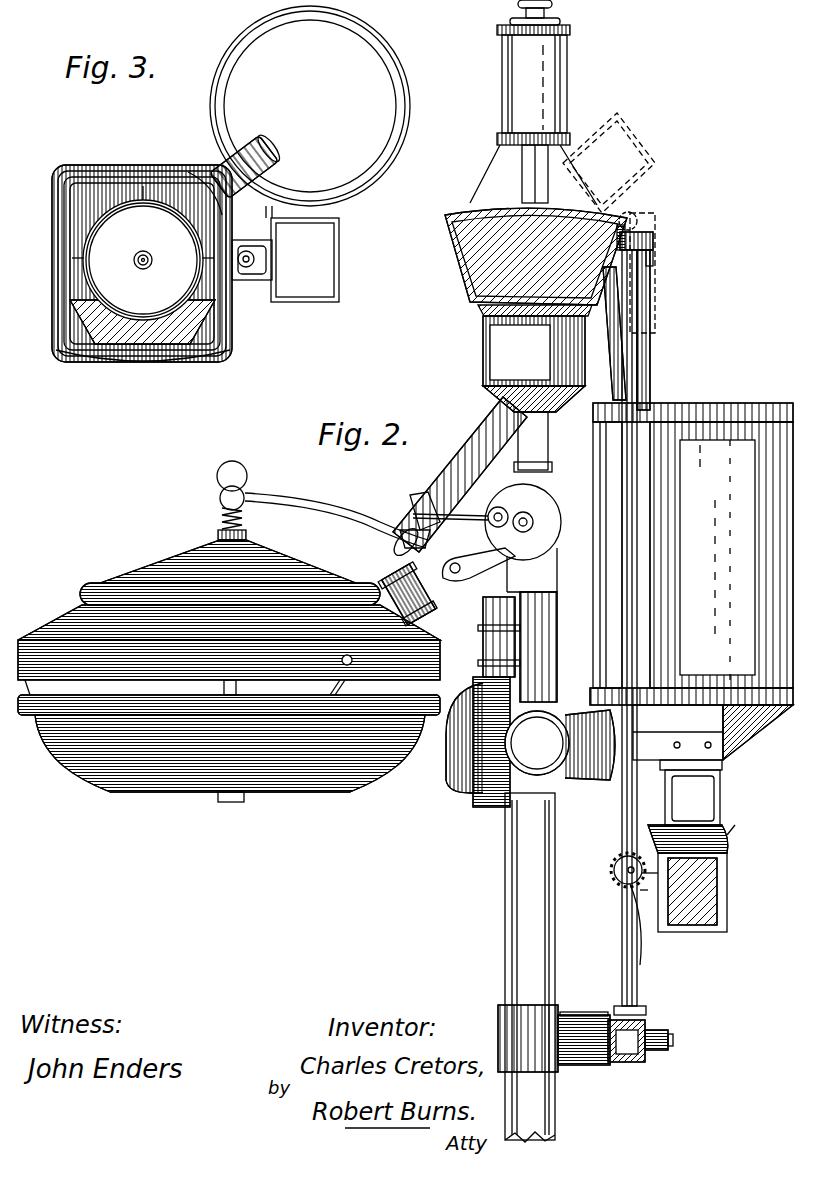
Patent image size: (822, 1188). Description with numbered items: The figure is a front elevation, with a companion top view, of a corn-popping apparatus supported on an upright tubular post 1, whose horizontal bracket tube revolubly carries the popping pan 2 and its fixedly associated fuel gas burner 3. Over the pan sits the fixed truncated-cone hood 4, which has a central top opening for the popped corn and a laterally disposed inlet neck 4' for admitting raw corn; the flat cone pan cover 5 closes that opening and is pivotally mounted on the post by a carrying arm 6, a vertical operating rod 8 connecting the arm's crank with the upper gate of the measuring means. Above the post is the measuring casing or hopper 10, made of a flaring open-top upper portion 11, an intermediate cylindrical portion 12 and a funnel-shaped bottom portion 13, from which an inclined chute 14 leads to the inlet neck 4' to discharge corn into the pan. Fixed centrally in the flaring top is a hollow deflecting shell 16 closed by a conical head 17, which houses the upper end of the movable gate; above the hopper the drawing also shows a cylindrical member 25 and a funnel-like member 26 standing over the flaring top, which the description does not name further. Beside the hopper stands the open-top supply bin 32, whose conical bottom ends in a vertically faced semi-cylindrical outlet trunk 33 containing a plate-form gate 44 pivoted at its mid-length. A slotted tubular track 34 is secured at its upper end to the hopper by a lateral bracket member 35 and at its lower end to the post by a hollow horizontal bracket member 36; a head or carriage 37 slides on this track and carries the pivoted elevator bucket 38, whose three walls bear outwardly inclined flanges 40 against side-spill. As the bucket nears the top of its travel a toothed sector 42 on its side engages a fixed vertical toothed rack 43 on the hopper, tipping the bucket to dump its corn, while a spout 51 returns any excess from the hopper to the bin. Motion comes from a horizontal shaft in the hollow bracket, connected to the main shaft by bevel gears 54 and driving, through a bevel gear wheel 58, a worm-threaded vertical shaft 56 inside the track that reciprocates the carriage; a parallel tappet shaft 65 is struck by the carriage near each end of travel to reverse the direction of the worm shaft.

In FIG. 2, the upright tubular post 1 is at (508, 943).
In FIG. 2, the popping pan 2 is at (229, 667).
In FIG. 2, the fuel gas burner 3 is at (229, 748).
In FIG. 2, the hood 4 is at (229, 622).
In FIG. 2, the inlet neck 4' is at (412, 594).
In FIG. 2, the pan cover 5 is at (230, 572).
In FIG. 2, the carrying arm 6 is at (322, 504).
In FIG. 2, the vertical operating rod 8 is at (487, 476).
In FIG. 3, the casing or hopper 10 is at (142, 253).
In FIG. 2, the flaring open top upper portion 11 is at (536, 262).
In FIG. 2, the intermediate cylindrical portion 12 is at (534, 351).
In FIG. 2, the funnel shaped bottom portion 13 is at (534, 429).
In FIG. 2, the inclined chute 14 is at (455, 505).
In FIG. 3, the hollow deflecting shell 16 is at (143, 253).
In FIG. 3, the conical head 17 is at (143, 250).
In FIG. 2, the oil reservoir 25 is at (533, 72).
In FIG. 2, the funnel 26 is at (521, 170).
In FIG. 3, the supply bin 32 is at (310, 112).
In FIG. 2, the supply bin 32 is at (691, 554).
In FIG. 2, the outlet trunk 33 is at (728, 775).
In FIG. 2, the vertically disposed guideway or track 34 is at (640, 303).
In FIG. 2, the lateral bracket member 35 is at (655, 240).
In FIG. 2, the hollow horizontal bracket member 36 is at (584, 1038).
In FIG. 3, the head or carriage 37 is at (252, 250).
In FIG. 2, the head or carriage 37 is at (638, 903).
In FIG. 3, the elevator bucket 38 is at (305, 260).
In FIG. 2, the elevator bucket 38 is at (730, 890).
In FIG. 2, the outwardly inclined plates or flanges 40 is at (691, 839).
In FIG. 2, the toothed sector 42 is at (622, 878).
In FIG. 2, the fixed vertical toothed rack 43 is at (636, 222).
In FIG. 2, the gate or valve 44 is at (705, 808).
In FIG. 3, the tube or spout 51 is at (280, 155).
In FIG. 2, the tube or spout 51 is at (606, 350).
In FIG. 2, the bevel gears 54 is at (615, 1062).
In FIG. 3, the vertical shaft 56 is at (248, 267).
In FIG. 2, the bevel gear wheel 58 is at (648, 1022).
In FIG. 2, the vertical tappet shaft 65 is at (652, 350).